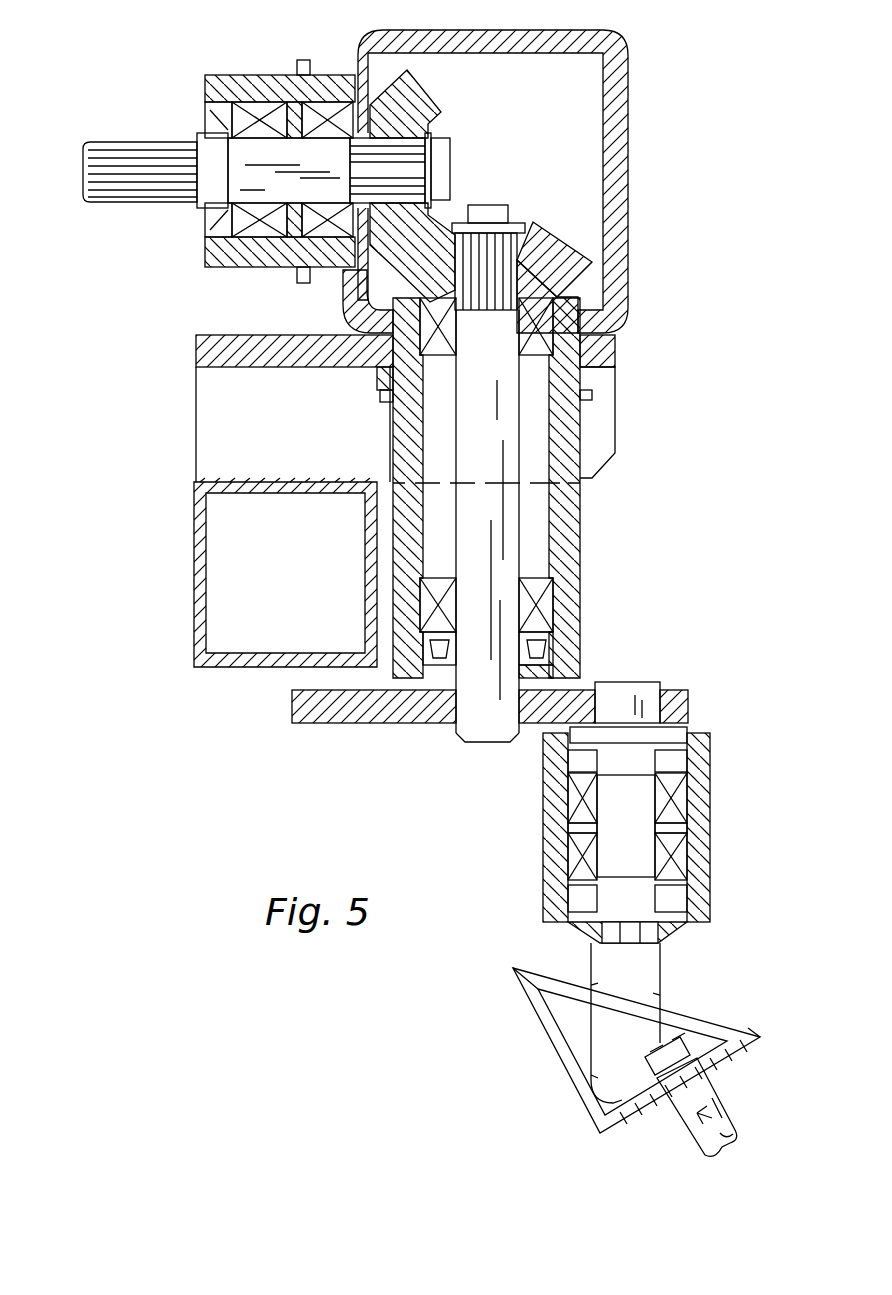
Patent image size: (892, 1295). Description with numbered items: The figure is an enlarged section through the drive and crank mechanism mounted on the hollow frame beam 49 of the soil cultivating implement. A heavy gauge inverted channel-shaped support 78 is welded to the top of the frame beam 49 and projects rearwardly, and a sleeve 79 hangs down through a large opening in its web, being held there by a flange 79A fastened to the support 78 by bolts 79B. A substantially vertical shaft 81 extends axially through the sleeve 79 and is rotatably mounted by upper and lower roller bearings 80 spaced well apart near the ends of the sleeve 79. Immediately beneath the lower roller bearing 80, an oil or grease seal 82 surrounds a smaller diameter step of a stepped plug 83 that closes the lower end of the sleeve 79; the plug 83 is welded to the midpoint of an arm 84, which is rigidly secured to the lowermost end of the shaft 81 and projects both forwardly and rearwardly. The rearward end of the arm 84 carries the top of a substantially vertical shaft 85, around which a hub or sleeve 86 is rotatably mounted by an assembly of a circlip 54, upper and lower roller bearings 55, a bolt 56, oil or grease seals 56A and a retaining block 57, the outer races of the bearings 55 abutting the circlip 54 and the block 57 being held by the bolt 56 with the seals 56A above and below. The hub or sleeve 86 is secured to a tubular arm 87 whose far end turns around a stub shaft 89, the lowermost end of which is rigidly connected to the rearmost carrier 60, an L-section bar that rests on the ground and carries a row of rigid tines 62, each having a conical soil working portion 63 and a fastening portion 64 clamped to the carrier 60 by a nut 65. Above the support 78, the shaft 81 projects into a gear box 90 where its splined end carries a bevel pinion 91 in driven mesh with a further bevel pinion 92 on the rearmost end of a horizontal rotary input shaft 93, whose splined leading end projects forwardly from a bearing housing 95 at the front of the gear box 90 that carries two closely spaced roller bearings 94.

The frame beam 49 is at (197, 516).
The circlip 54 is at (568, 828).
The roller bearings 55 is at (570, 795).
The bolt 56 is at (600, 938).
The oil or grease seal 56A is at (568, 760).
The retaining block 57 is at (680, 925).
The carrier 60 is at (528, 996).
The tine 62 is at (715, 1116).
The soil working portion 63 is at (688, 1133).
The fastening portion 64 is at (645, 1062).
The nut 65 is at (700, 1038).
The support 78 is at (200, 376).
The sleeve 79 is at (579, 550).
The flange 79A is at (377, 378).
The bolts 79B is at (598, 396).
The roller bearings 80 is at (520, 327).
The shaft 81 is at (465, 428).
The oil or grease seal 82 is at (553, 650).
The stepped plug 83 is at (462, 688).
The arm 84 is at (300, 703).
The shaft 85 is at (630, 700).
The hub or sleeve 86 is at (705, 880).
The tubular arm 87 is at (710, 793).
The stub shaft 89 is at (650, 988).
The gear box 90 is at (625, 108).
The bevel pinion 91 is at (548, 224).
The bevel pinion 92 is at (415, 94).
The rotary input shaft 93 is at (140, 141).
The roller bearings 94 is at (262, 105).
The bearing housing 95 is at (235, 262).